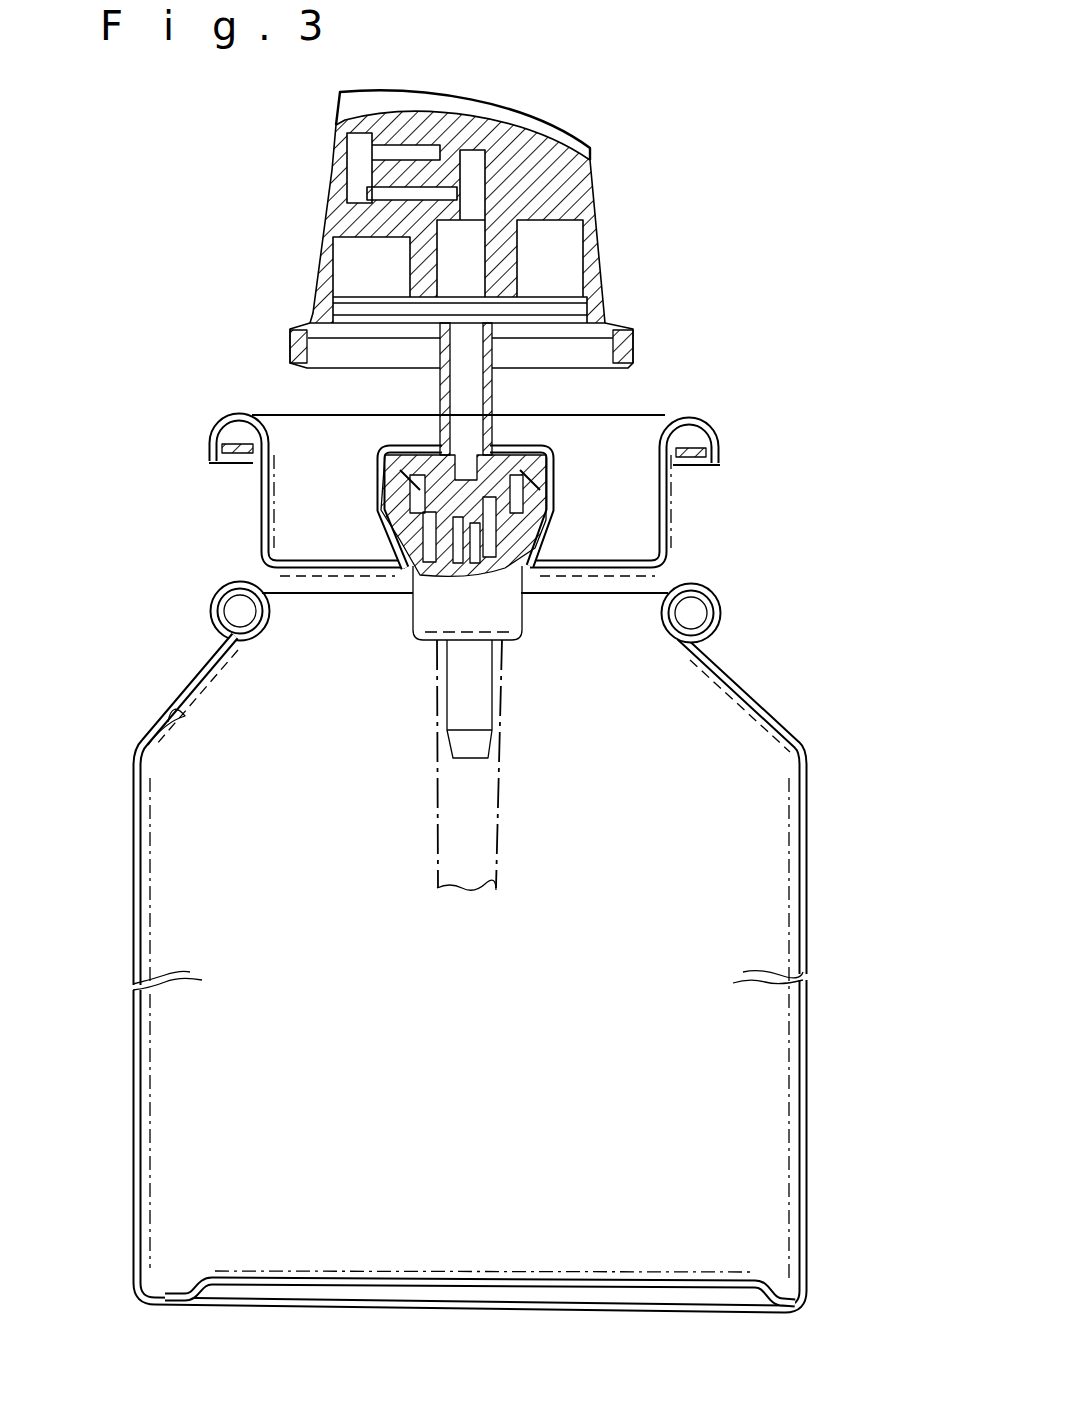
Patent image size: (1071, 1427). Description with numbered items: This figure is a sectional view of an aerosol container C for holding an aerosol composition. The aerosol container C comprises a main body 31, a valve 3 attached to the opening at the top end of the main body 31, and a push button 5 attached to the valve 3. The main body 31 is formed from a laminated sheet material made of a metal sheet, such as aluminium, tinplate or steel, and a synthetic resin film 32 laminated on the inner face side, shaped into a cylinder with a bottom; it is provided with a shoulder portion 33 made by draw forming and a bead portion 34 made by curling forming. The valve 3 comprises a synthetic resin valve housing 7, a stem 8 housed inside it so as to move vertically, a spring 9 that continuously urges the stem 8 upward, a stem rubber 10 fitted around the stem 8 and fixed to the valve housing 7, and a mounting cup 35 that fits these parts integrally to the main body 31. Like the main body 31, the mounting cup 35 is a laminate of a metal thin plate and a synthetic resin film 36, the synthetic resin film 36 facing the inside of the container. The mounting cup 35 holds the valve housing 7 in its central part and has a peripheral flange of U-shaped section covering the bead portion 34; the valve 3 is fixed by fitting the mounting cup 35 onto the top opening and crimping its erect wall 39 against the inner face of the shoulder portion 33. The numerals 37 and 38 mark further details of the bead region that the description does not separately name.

The push button 5 is at (603, 254).
The stem 8 is at (440, 387).
The spring 9 is at (556, 500).
The stem rubber 10 is at (530, 450).
The valve housing 7 is at (523, 637).
The mounting cup 35 is at (676, 515).
The synthetic resin film 36 is at (237, 453).
The bead 37 is at (706, 421).
The bead insert 38 is at (235, 433).
The erect wall 39 is at (256, 488).
The valve 3 is at (546, 619).
The aerosol container C is at (812, 757).
The main body 31 is at (812, 925).
The synthetic resin film 32 is at (135, 762).
The shoulder portion 33 is at (760, 697).
The bead portion 34 is at (722, 624).